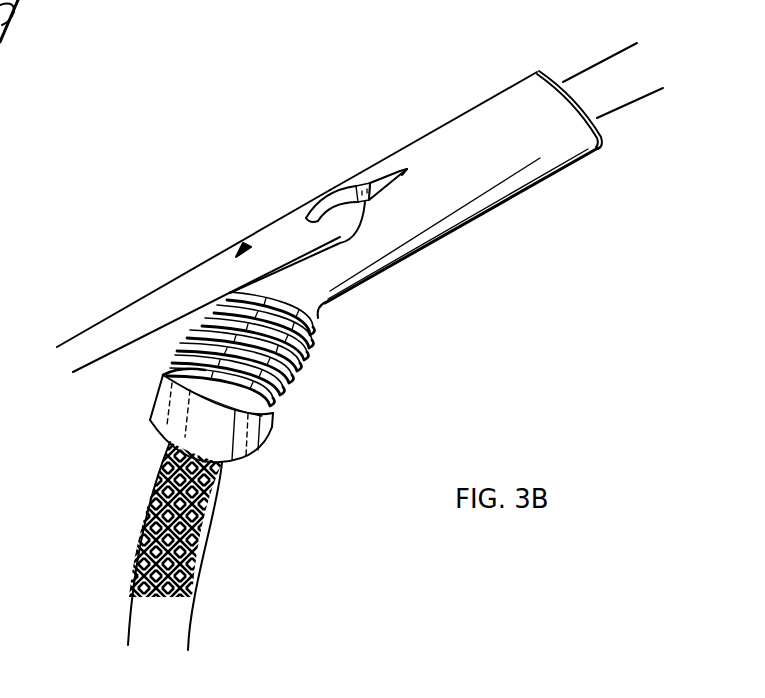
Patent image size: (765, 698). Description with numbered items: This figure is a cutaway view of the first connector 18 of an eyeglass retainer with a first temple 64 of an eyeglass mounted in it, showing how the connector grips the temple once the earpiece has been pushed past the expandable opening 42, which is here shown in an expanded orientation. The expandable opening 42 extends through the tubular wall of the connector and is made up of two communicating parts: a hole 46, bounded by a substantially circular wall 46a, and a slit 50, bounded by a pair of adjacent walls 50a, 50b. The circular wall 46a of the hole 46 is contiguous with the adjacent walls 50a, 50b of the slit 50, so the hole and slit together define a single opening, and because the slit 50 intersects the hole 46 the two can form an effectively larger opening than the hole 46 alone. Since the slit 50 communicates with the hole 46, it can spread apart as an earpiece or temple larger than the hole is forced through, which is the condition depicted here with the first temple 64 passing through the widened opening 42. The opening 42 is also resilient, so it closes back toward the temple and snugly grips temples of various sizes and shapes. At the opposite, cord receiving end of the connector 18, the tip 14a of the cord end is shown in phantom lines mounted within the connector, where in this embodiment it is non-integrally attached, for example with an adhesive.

The first connector 18 is at (395, 115).
The first temple 64 is at (167, 303).
The expandable opening 42 is at (332, 174).
The hole 46 is at (318, 193).
The circular wall 46a is at (347, 193).
The slit 50 is at (387, 190).
The adjacent wall of slit 50a is at (402, 178).
The adjacent wall of slit 50b is at (382, 177).
The tip of cord end 14a is at (272, 445).